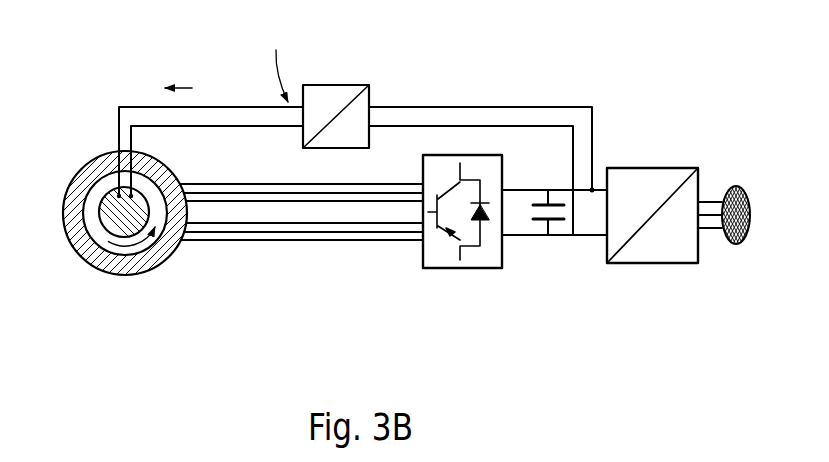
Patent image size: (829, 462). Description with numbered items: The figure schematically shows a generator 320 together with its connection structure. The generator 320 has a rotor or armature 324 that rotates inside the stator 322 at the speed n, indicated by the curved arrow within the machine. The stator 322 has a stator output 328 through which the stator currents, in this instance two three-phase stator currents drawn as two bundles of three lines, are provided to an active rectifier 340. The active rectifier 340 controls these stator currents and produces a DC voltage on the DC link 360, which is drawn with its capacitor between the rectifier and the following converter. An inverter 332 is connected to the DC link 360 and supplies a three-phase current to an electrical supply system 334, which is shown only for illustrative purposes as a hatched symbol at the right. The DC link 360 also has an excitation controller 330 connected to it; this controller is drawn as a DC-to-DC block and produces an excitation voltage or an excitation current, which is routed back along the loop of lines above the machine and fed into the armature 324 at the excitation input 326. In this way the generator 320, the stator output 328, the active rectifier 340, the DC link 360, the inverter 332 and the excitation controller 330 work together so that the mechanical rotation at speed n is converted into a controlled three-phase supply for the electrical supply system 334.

The generator 320 is at (103, 242).
The stator 322 is at (74, 160).
The rotor or armature 324 is at (87, 257).
The excitation input 326 is at (107, 114).
The stator output 328 is at (195, 257).
The excitation controller 330 is at (330, 85).
The inverter 332 is at (645, 178).
The electrical supply system 334 is at (737, 244).
The active rectifier 340 is at (465, 268).
The DC link 360 is at (553, 256).
The speed n is at (128, 258).